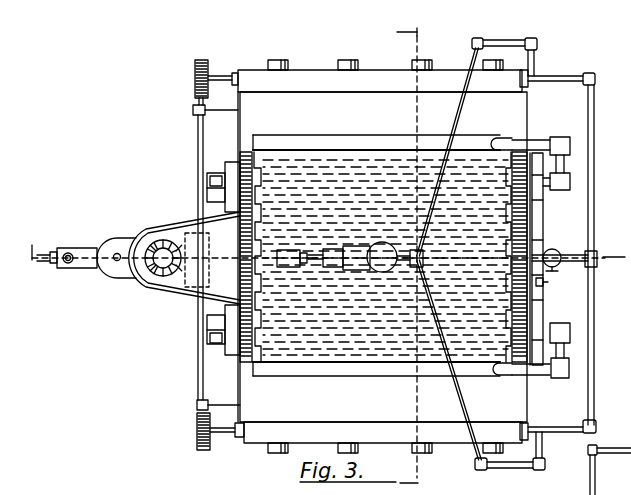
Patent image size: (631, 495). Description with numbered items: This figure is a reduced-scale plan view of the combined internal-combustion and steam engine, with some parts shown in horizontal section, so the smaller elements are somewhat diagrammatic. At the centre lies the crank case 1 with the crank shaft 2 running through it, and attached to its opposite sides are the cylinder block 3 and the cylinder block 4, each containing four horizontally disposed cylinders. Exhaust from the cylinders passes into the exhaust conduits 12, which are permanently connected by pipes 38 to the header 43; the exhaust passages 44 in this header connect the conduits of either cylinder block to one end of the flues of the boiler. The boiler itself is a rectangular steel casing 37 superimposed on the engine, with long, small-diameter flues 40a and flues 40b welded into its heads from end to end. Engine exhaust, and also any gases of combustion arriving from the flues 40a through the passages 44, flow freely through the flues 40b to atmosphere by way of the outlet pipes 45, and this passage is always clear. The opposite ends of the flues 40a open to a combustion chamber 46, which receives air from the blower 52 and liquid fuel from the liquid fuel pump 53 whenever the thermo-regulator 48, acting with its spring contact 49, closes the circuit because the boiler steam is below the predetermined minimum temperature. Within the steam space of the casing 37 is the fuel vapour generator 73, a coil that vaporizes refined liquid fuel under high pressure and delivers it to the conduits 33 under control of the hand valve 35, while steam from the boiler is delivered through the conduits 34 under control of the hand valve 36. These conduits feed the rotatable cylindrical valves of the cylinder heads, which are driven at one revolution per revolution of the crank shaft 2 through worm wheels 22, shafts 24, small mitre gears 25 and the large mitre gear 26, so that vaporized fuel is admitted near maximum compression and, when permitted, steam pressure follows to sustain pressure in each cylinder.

The crank case 1 is at (405, 255).
The crank shaft 2 is at (326, 242).
The cylinder block 3 is at (380, 91).
The cylinder block 4 is at (383, 421).
The exhaust conduits 12 is at (305, 143).
The worm wheels 22 is at (217, 60).
The shafts 24 is at (198, 140).
The small mitre gears 25 is at (180, 238).
The large mitre gear 26 is at (224, 229).
The conduits 33 is at (587, 102).
The conduits 34 is at (456, 127).
The hand valve 35 is at (545, 282).
The hand valve 36 is at (388, 257).
The boiler casing 37 is at (268, 157).
The pipes 38 is at (538, 138).
The flues 40a is at (312, 290).
The flues 40b is at (251, 160).
The header 43 is at (542, 323).
The exhaust passages 44 is at (538, 218).
The outlet pipes 45 is at (211, 172).
The combustion chamber 46 is at (167, 293).
The thermo-regulator 48 is at (315, 255).
The spring contact 49 is at (297, 243).
The blower 52 is at (147, 237).
The liquid fuel pump 53 is at (90, 248).
The fuel vapour generator 73 is at (543, 246).